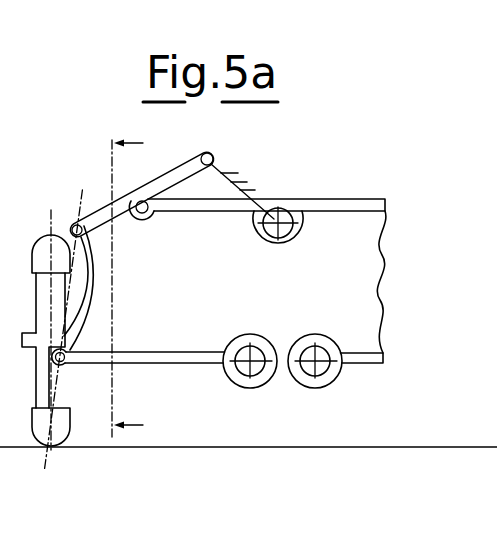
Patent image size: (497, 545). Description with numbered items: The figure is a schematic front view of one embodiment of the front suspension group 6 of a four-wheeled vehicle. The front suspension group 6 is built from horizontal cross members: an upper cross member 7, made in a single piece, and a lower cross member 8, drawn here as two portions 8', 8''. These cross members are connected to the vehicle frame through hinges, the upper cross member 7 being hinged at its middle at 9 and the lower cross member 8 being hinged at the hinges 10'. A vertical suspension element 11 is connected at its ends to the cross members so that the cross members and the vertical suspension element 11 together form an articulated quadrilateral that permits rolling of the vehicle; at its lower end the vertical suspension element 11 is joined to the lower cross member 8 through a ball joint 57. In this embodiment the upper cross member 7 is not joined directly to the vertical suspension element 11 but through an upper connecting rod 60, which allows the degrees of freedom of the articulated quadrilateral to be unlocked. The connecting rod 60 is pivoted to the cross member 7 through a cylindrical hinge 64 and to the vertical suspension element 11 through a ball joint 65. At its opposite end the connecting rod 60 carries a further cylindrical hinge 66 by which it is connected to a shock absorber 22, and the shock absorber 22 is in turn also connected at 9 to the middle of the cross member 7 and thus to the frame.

The front suspension group 6 is at (330, 196).
The upper horizontal cross member 7 is at (366, 207).
The lower horizontal cross member 8 is at (224, 400).
The first part of lower cross member 8' is at (145, 337).
The second part of lower cross member 8'' is at (362, 340).
The hinge 9 is at (286, 230).
The hinge 10' is at (290, 339).
The vertical suspension element 11 is at (84, 286).
The shock absorber 22 is at (246, 183).
The ball joint 57 is at (65, 365).
The upper connecting rod 60 is at (168, 175).
The cylindrical hinge 64 is at (146, 212).
The ball joint 65 is at (75, 225).
The cylindrical hinge 66 is at (211, 153).